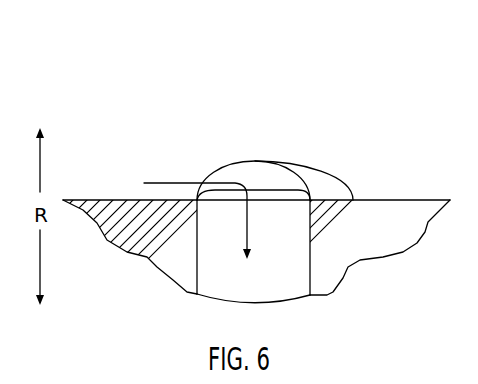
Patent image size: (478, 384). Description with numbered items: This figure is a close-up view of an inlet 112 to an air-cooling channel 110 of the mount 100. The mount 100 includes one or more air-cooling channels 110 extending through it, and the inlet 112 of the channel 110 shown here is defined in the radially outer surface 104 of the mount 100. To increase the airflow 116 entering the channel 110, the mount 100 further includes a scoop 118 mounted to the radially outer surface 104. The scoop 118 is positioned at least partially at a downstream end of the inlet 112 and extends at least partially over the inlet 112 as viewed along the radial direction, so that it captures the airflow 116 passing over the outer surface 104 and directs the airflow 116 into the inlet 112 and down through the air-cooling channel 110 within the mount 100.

The mount 100 is at (200, 107).
The outer surface 104 is at (395, 196).
The air-cooling channel 110 is at (204, 271).
The inlet 112 is at (260, 176).
The airflow 116 is at (173, 183).
The scoop 118 is at (320, 183).